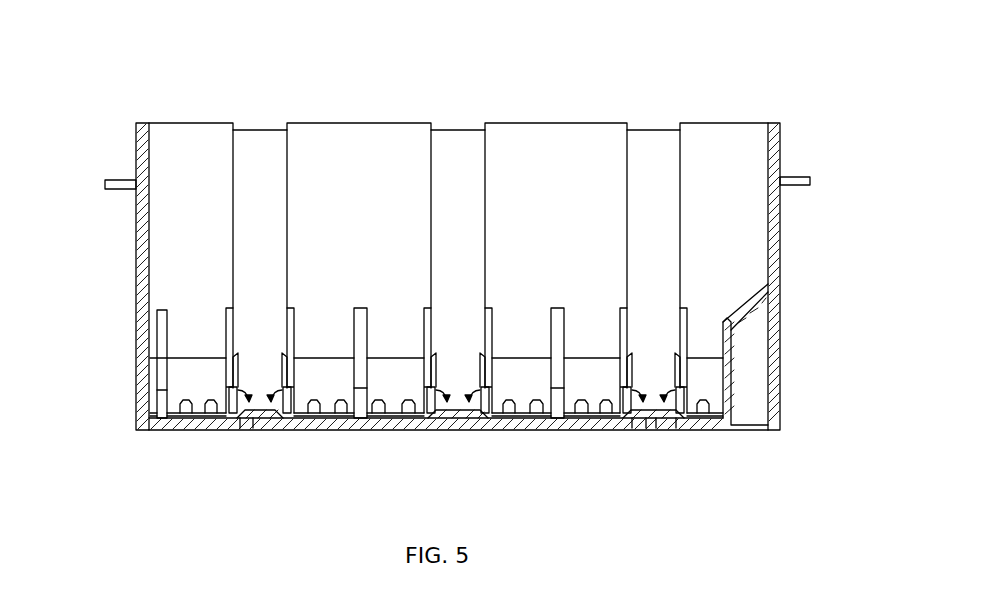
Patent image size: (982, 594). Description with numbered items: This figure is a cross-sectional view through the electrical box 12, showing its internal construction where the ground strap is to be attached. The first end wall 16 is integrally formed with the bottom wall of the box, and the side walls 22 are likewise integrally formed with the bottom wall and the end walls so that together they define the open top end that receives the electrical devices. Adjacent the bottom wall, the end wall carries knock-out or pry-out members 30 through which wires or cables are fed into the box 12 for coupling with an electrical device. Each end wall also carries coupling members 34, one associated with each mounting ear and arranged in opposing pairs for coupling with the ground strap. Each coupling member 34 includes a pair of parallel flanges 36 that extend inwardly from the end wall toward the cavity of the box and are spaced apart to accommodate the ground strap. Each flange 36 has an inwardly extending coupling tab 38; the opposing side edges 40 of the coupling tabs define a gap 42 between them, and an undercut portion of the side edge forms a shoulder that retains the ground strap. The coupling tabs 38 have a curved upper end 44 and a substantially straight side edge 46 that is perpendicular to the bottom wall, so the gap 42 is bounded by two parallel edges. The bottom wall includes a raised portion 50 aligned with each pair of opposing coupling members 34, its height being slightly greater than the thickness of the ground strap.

The electrical box 12 is at (804, 128).
The first end wall 16 is at (556, 162).
The side walls 22 is at (136, 160).
The knock-out or pry-out members 30 is at (192, 372).
The coupling member 34 is at (262, 331).
The flanges 36 is at (423, 306).
The coupling tab 38 is at (633, 429).
The side edges 40 is at (242, 393).
The gap 42 is at (253, 430).
The curved upper end 44 is at (272, 398).
The substantially straight side edge 46 is at (276, 428).
The raised portion 50 is at (650, 428).